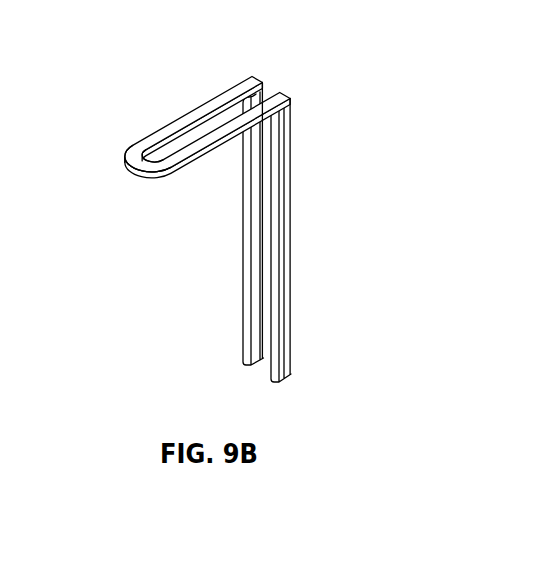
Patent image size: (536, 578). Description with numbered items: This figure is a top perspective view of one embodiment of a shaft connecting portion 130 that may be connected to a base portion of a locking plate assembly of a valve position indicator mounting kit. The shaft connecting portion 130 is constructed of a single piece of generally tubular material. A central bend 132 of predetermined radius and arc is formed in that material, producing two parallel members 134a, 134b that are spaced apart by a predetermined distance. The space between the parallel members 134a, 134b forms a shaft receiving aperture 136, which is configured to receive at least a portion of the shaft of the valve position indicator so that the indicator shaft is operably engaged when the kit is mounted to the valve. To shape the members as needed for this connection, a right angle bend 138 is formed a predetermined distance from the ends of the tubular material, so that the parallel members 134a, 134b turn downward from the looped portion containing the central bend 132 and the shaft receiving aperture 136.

The shaft connecting portion 130 is at (219, 206).
The central bend 132 is at (126, 162).
The parallel member 134a is at (243, 305).
The parallel member 134b is at (292, 332).
The shaft receiving aperture 136 is at (184, 141).
The right angle bend 138 is at (178, 202).